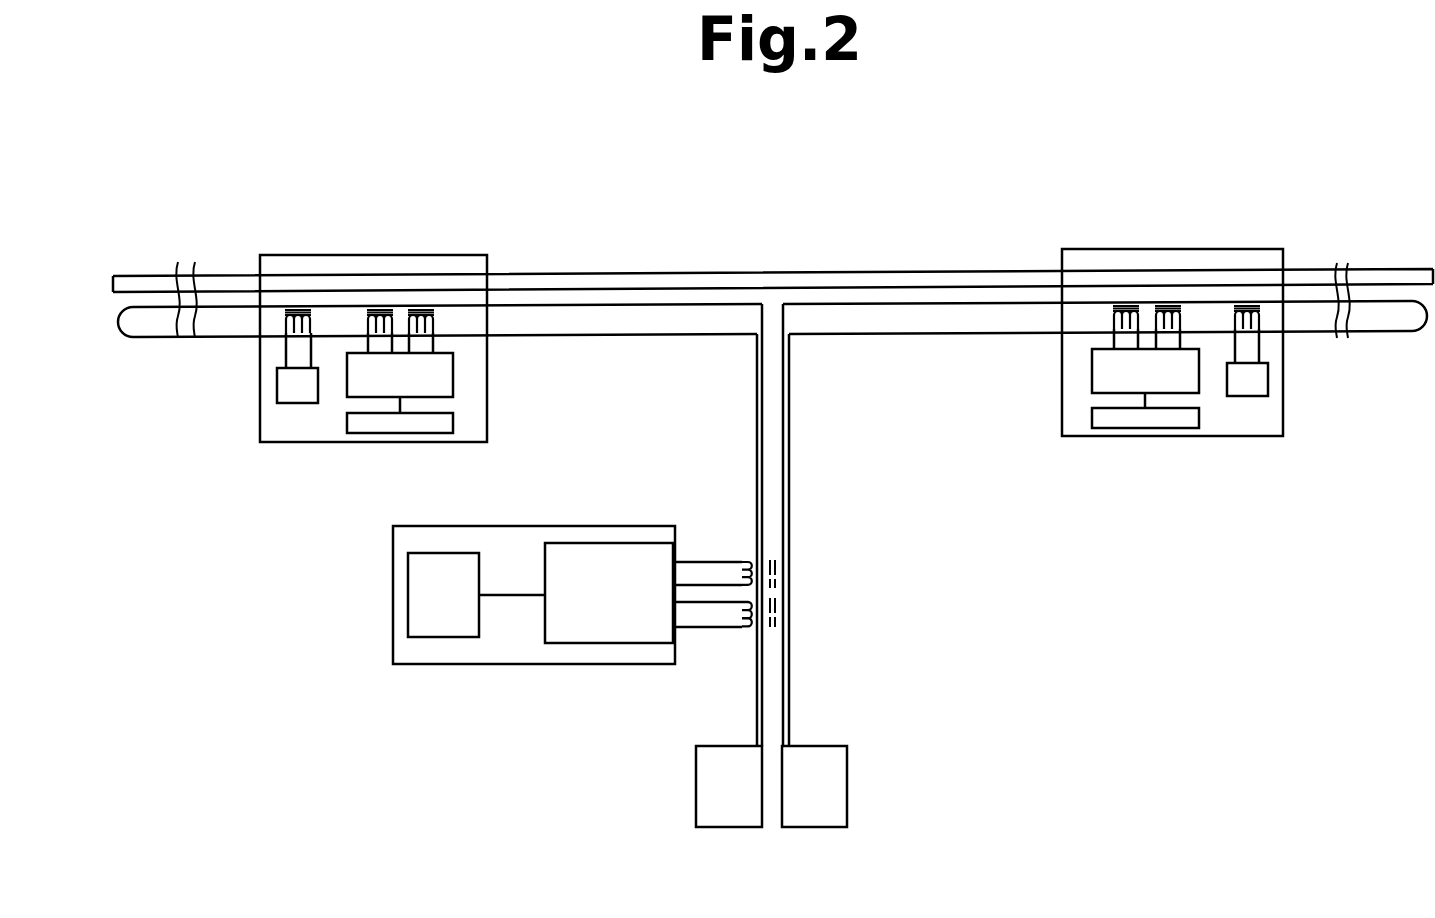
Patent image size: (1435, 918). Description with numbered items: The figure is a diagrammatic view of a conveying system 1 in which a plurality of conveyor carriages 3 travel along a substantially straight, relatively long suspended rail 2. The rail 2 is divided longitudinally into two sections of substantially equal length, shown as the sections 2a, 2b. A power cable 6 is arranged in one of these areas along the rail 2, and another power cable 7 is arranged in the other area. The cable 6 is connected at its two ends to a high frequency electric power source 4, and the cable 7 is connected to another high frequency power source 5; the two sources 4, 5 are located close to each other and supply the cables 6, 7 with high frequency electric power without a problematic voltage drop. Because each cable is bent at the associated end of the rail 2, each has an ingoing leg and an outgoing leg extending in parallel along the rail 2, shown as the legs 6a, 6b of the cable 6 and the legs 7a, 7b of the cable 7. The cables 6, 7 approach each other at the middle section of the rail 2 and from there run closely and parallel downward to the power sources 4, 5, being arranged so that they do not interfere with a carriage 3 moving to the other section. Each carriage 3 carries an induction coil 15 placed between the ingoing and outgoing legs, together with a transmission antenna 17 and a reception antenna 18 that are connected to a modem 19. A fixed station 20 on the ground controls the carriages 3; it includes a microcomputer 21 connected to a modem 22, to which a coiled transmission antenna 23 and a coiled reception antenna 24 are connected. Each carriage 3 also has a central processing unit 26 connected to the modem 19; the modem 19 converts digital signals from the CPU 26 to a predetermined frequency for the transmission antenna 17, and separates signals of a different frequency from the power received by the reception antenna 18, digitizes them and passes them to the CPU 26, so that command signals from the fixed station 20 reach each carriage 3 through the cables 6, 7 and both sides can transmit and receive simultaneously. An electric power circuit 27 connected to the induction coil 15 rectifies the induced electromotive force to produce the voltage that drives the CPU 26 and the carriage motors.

The conveying system 1 is at (878, 234).
The suspended rail 2 is at (634, 263).
The first conductor of transmission line 2a is at (525, 275).
The second conductor of transmission line 2b is at (933, 273).
The conveyor carriage 3 is at (368, 244).
The high frequency electric power source 4 is at (696, 785).
The high frequency power source 5 is at (847, 785).
The power cable 6 is at (628, 338).
The branch line conductor 6a is at (757, 418).
The branch line conductor 6b is at (765, 468).
The power cable 7 is at (913, 336).
The branch line conductor 7a is at (778, 418).
The branch line conductor 7b is at (790, 468).
The induction coil 15 is at (288, 322).
The transmission antenna 17 is at (362, 322).
The reception antenna 18 is at (436, 322).
The modem 19 is at (453, 378).
The fixed station 20 is at (381, 598).
The microcomputer 21 is at (463, 610).
The modem 22 is at (564, 643).
The coiled transmission antenna 23 is at (747, 562).
The coiled reception antenna 24 is at (745, 627).
The central processing unit 26 is at (453, 423).
The electric power circuit 27 is at (277, 387).